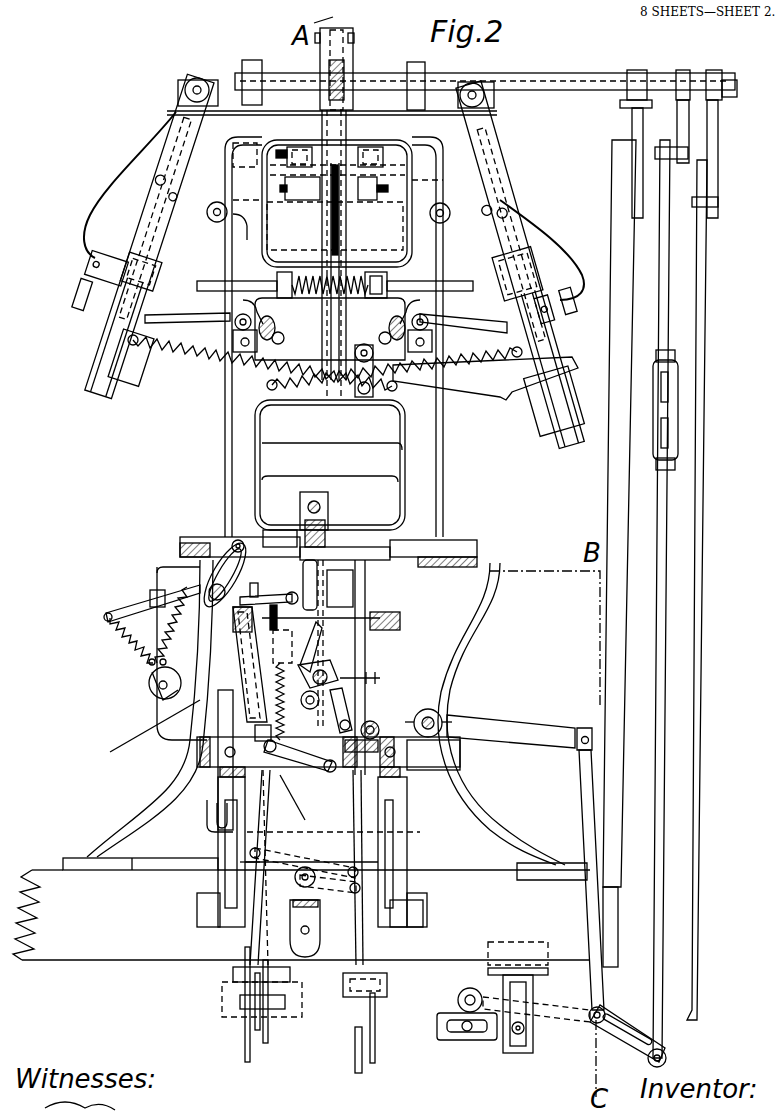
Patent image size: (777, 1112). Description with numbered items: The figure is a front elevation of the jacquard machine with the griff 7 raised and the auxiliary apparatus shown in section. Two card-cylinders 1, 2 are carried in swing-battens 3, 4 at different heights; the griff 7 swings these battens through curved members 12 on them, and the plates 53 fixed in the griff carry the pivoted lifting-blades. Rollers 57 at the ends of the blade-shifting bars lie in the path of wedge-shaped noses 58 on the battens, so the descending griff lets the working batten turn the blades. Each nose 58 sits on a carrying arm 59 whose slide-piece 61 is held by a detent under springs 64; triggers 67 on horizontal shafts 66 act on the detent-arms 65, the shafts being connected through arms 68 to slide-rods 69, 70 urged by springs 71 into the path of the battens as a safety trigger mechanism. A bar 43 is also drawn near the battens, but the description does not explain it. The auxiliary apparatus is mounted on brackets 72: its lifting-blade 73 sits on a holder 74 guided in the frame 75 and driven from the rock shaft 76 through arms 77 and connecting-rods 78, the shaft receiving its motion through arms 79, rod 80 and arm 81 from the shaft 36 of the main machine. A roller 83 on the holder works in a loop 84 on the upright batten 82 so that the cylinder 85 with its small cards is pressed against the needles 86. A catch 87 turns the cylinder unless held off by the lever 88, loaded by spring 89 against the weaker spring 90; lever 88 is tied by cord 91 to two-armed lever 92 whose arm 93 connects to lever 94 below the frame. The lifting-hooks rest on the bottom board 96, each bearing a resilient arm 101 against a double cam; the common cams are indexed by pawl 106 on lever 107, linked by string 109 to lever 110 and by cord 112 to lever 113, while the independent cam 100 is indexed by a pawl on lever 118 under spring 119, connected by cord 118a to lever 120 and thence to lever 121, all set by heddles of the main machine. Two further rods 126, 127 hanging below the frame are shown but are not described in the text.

The card-cylinder 1 is at (130, 358).
The card-cylinder 2 is at (532, 425).
The swing-batten 3 is at (90, 372).
The swing-batten 4 is at (560, 350).
The griff 7 is at (305, 152).
The curved member 12 is at (135, 180).
The shaft 36 is at (458, 992).
The lever bar 43 is at (462, 382).
The plates 53 is at (337, 203).
The rollers 57 is at (214, 203).
The wedge-shaped noses 58 is at (158, 278).
The carrying arm 59 is at (160, 232).
The slide-piece 61 is at (545, 310).
The springs 64 is at (88, 262).
The detent-arms 65 is at (92, 290).
The horizontal shaft 66 is at (240, 335).
The triggers 67 is at (175, 316).
The arms 68 is at (280, 335).
The slide-rod 69 is at (410, 281).
The slide-rod 70 is at (237, 281).
The springs 71 is at (345, 280).
The brackets 72 is at (392, 855).
The lifting-blade 73 is at (350, 532).
The holder 74 is at (327, 578).
The frame 75 is at (341, 667).
The rock shaft 76 is at (424, 710).
The arms 77 is at (380, 695).
The connecting-rods 78 is at (296, 630).
The arms 79 is at (487, 724).
The rod 80 is at (582, 800).
The arm 81 is at (565, 1010).
The batten 82 is at (158, 698).
The roller 83 is at (225, 540).
The loop 84 is at (222, 602).
The cylinder 85 is at (240, 640).
The needles 86 is at (323, 655).
The catch 87 is at (265, 597).
The lever 88 is at (126, 607).
The spring 89 is at (130, 648).
The spring 90 is at (170, 652).
The cord 91 is at (200, 740).
The two-armed lever 92 is at (280, 890).
The lever-arm 93 is at (348, 870).
The two-armed lever 94 is at (258, 1030).
The bottom board 96 is at (355, 770).
The double cam 100 is at (345, 690).
The resilient arm 101 is at (335, 700).
The pawl 106 is at (273, 685).
The lever 107 is at (218, 795).
The string 109 is at (275, 830).
The lever 110 is at (255, 862).
The cord 112 is at (265, 932).
The lever 113 is at (268, 1026).
The lever 118 is at (288, 776).
The cord 118a is at (217, 820).
The spring 119 is at (138, 744).
The lever 120 is at (285, 866).
The lever 121 is at (245, 1040).
The rod 126 is at (375, 1040).
The rod 127 is at (356, 1060).